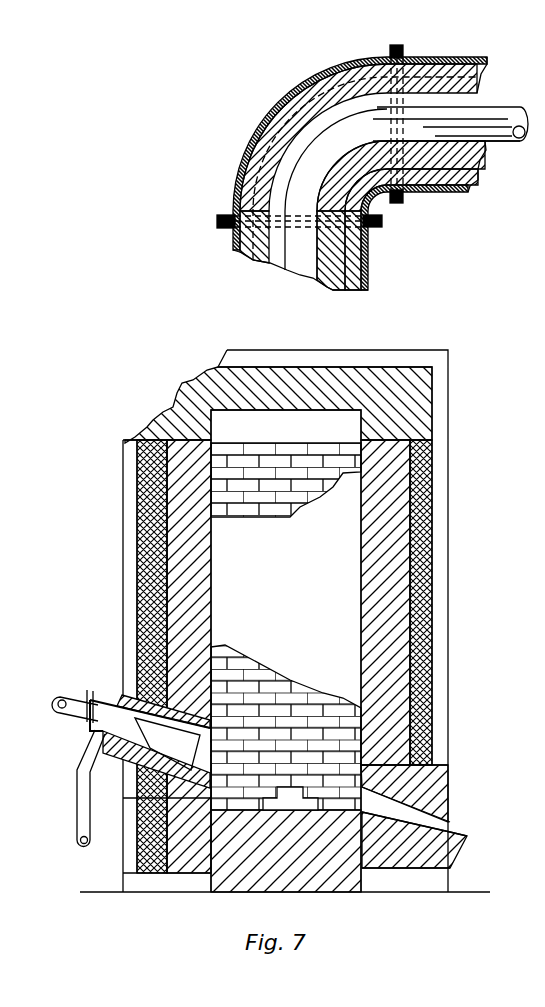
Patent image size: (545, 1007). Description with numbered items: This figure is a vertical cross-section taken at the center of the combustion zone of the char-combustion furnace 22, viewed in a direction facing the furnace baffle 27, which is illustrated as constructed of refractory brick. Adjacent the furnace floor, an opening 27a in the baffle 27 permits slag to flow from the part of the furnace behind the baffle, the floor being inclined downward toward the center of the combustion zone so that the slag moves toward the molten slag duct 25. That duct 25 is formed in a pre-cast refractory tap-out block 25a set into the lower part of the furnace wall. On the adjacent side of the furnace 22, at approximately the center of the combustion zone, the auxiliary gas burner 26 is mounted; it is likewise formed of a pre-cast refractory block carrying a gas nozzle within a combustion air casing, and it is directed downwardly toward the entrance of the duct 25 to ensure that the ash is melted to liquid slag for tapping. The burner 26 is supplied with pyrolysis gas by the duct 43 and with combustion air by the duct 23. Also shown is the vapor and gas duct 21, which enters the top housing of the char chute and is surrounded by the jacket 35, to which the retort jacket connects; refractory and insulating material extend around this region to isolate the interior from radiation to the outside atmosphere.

The vapor and gas duct 21 is at (500, 107).
The furnace 22 is at (295, 611).
The combustion air duct 23 is at (77, 833).
The molten slag duct 25 is at (392, 812).
The pre-cast refractory tap-out block 25a is at (452, 815).
The auxiliary gas burner 26 is at (140, 698).
The furnace baffle 27 is at (330, 442).
The opening 27a is at (290, 800).
The jacket 35 is at (278, 191).
The pyrolysis gas duct 43 is at (72, 713).